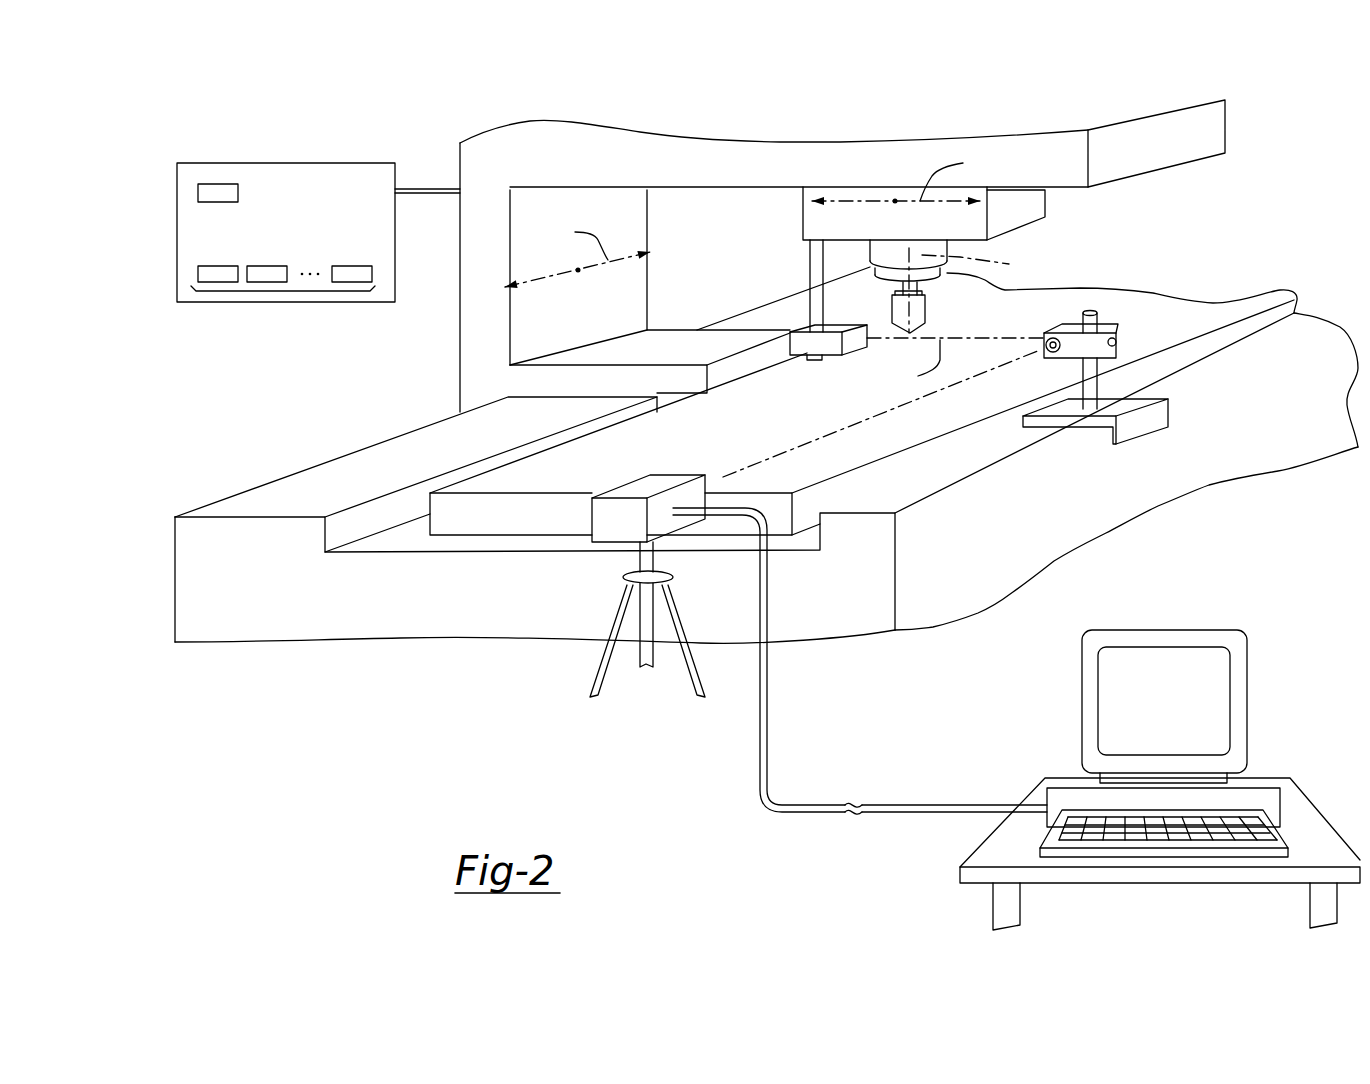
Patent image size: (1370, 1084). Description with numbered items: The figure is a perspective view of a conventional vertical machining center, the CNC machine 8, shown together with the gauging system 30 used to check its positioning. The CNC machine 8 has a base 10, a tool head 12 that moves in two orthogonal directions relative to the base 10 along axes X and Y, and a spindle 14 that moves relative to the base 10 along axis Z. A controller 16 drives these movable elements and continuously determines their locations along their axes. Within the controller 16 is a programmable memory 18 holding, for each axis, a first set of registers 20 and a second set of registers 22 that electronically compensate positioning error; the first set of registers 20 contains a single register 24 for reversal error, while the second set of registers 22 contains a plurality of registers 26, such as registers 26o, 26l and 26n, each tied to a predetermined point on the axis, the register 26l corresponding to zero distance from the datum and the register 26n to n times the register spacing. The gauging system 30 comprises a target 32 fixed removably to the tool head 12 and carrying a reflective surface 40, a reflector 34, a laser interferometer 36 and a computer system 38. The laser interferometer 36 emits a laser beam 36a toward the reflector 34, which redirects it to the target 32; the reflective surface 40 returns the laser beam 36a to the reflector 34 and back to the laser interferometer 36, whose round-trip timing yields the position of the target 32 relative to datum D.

The CNC machine 8 is at (1282, 92).
The base 10 is at (1192, 307).
The tool head 12 is at (813, 227).
The spindle 14 is at (925, 293).
The controller 16 is at (293, 219).
The programmable memory 18 is at (217, 166).
The first set of registers 20 is at (206, 178).
The second set of registers 22 is at (293, 286).
The single register 24 is at (215, 198).
The registers 26 is at (293, 286).
The register 26o is at (197, 275).
The register 26l is at (273, 272).
The register 26n is at (363, 275).
The gauging system 30 is at (1146, 345).
The target 32 is at (818, 328).
The reflector 34 is at (1120, 327).
The laser interferometer 36 is at (792, 582).
The laser beam 36a is at (763, 465).
The computer system 38 is at (1176, 630).
The reflective surface 40 is at (853, 342).